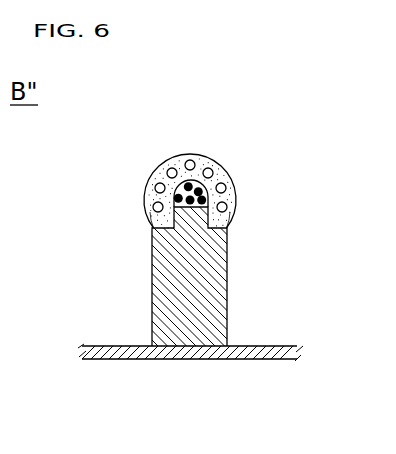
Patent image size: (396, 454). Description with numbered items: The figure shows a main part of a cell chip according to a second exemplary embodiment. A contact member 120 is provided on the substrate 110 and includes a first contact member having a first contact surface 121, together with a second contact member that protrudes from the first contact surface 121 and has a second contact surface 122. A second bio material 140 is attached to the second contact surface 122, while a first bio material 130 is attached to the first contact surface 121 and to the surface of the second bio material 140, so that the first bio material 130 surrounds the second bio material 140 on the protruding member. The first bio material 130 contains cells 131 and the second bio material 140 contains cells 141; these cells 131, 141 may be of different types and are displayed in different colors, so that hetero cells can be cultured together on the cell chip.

The substrate 110 is at (198, 360).
The contact member 120 is at (252, 300).
The first contact surface 121 is at (226, 223).
The second contact surface 122 is at (154, 218).
The first bio material 130 is at (153, 173).
The cells 131 is at (190, 160).
The second bio material 140 is at (233, 188).
The cells 141 is at (213, 177).